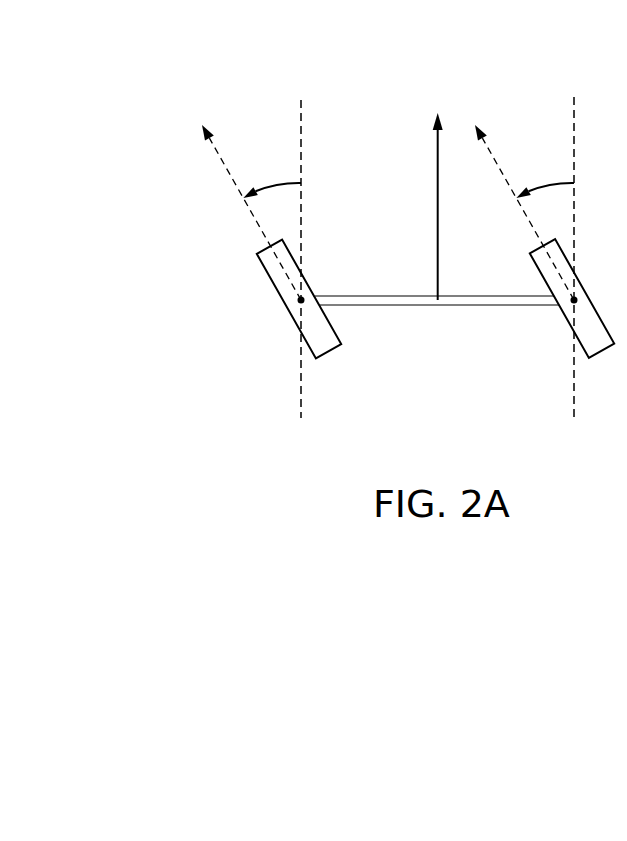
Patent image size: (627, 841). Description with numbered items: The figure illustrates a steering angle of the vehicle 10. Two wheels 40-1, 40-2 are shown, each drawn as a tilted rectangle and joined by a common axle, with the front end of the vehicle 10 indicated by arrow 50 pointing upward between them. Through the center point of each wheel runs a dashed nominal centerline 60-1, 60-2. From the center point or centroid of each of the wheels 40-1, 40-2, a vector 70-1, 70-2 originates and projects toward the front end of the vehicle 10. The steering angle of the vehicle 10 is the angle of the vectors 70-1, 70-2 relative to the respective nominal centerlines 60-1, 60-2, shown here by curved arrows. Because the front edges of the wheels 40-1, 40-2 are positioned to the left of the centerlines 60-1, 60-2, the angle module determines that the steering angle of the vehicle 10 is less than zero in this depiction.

The vehicle 10 is at (203, 77).
The wheel 40-1 is at (286, 305).
The wheel 40-2 is at (565, 315).
The arrow 50 is at (437, 208).
The nominal centerline 60-1 is at (301, 377).
The nominal centerline 60-2 is at (574, 377).
The vector 70-1 is at (227, 172).
The vector 70-2 is at (493, 157).